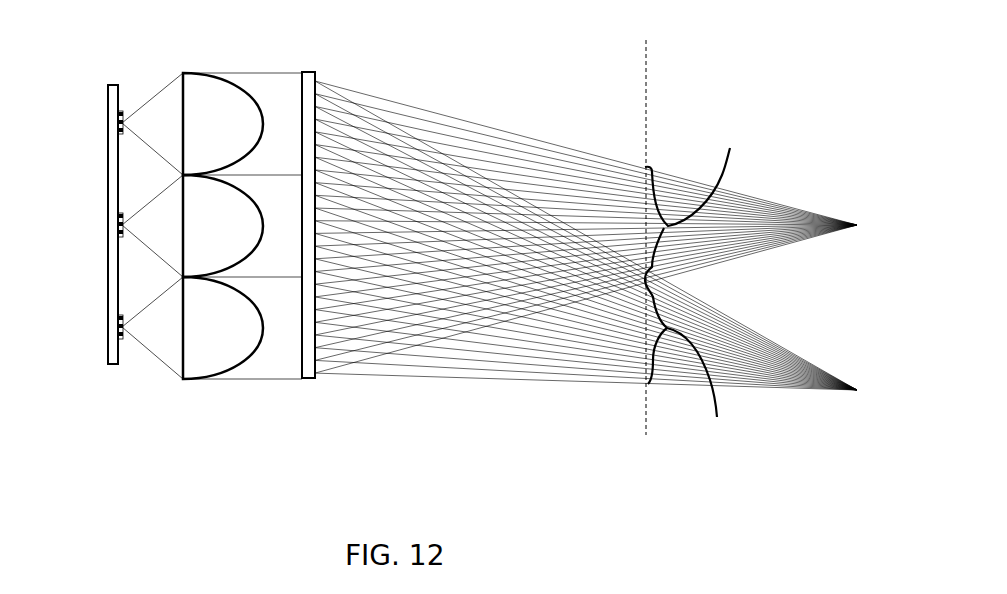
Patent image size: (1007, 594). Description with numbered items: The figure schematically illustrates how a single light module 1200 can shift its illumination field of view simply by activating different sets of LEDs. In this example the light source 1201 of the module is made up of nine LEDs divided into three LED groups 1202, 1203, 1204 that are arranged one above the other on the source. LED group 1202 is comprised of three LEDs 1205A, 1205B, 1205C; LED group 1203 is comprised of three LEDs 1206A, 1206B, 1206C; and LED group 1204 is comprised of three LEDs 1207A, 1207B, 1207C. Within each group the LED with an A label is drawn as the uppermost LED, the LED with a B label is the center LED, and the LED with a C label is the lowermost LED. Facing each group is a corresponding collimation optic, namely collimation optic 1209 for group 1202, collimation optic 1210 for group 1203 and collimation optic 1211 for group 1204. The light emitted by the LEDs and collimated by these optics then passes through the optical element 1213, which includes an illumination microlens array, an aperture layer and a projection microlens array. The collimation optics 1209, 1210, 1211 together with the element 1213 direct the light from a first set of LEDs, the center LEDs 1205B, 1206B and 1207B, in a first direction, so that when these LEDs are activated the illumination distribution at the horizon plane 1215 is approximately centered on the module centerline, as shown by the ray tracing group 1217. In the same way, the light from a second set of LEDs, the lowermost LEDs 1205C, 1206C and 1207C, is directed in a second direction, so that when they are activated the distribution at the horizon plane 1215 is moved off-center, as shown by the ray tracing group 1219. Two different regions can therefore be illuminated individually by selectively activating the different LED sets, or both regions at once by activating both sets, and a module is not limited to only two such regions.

The light module 1200 is at (348, 444).
The light source 1201 is at (108, 86).
The LED group 1202 is at (120, 134).
The LED group 1203 is at (120, 214).
The LED group 1204 is at (120, 338).
The LED 1205A is at (123, 114).
The LED 1205B is at (123, 122).
The LED 1205C is at (123, 130).
The LED 1206A is at (123, 218).
The LED 1206B is at (123, 226).
The LED 1206C is at (123, 234).
The LED 1207A is at (123, 320).
The LED 1207B is at (123, 328).
The LED 1207C is at (123, 336).
The collimation optic 1209 is at (241, 131).
The collimation optic 1210 is at (241, 235).
The collimation optic 1211 is at (241, 335).
The optical element 1213 is at (308, 72).
The horizon plane 1215 is at (647, 85).
The ray tracing group 1217 is at (699, 177).
The ray tracing group 1219 is at (692, 335).